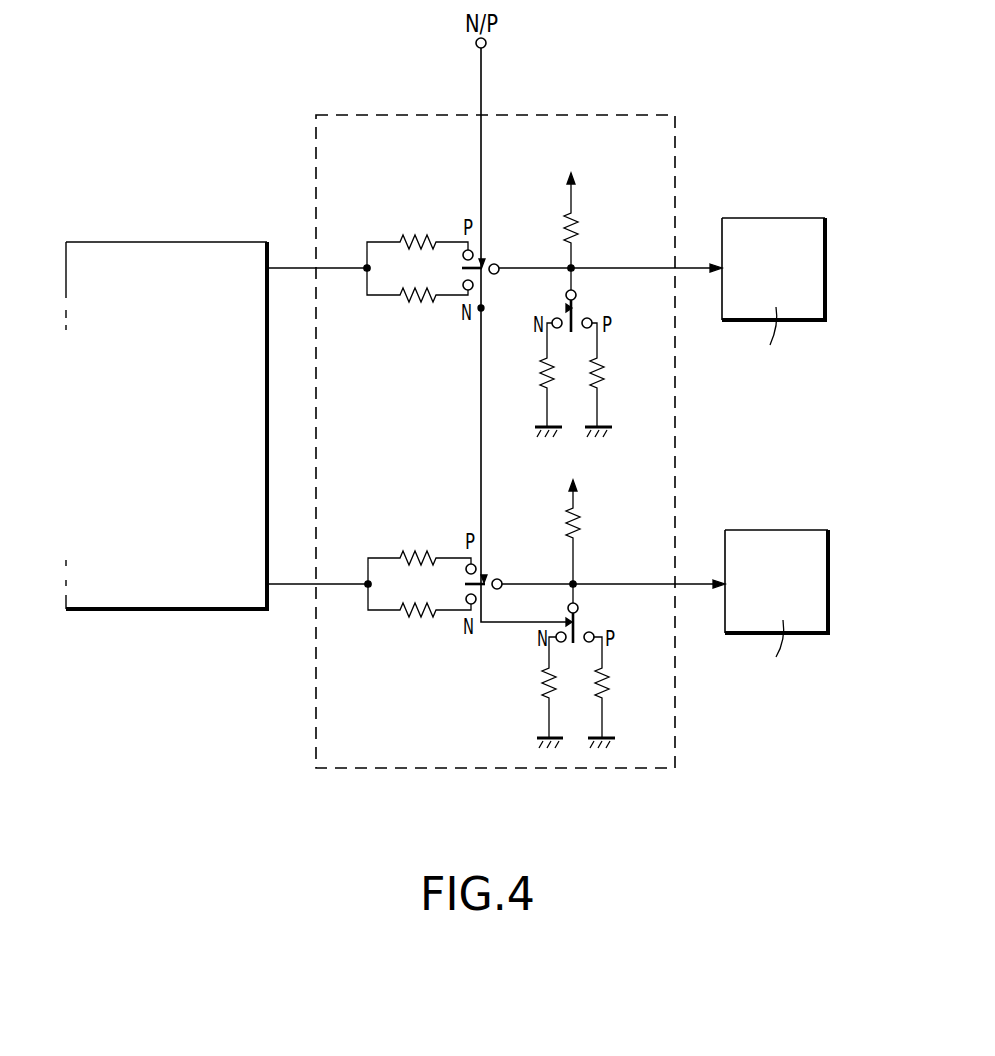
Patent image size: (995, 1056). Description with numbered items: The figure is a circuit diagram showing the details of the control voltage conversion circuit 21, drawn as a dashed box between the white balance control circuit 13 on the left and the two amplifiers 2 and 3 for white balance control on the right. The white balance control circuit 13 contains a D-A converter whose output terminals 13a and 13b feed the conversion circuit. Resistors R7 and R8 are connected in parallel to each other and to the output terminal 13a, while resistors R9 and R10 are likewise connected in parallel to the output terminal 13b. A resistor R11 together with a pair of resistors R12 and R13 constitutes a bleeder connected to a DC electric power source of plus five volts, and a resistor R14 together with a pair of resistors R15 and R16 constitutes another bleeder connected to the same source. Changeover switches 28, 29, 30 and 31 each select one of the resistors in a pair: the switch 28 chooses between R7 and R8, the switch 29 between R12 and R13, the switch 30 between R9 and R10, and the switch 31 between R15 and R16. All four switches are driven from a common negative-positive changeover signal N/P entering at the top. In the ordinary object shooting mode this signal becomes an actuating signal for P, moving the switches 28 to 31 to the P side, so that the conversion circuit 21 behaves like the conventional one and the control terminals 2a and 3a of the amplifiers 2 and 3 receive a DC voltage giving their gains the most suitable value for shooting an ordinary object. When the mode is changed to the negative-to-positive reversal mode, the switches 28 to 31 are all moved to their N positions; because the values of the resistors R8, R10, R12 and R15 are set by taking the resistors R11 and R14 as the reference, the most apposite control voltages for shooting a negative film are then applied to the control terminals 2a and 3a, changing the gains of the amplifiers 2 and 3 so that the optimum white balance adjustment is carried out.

The amplifier for white balance control 2 is at (777, 220).
The control terminal 2a is at (721, 262).
The amplifier for white balance control 3 is at (785, 530).
The control terminal 3a is at (724, 578).
The white balance control circuit 13 is at (130, 242).
The output terminal 13a is at (270, 266).
The output terminal 13b is at (268, 589).
The control voltage conversion circuit 21 is at (606, 115).
The changeover switch 28 is at (488, 262).
The changeover switch 29 is at (577, 315).
The changeover switch 30 is at (490, 578).
The changeover switch 31 is at (580, 630).
The resistor R7 is at (416, 234).
The resistor R8 is at (418, 300).
The resistor R9 is at (416, 550).
The resistor R10 is at (414, 617).
The resistor R11 is at (580, 226).
The resistor R12 is at (540, 378).
The resistor R13 is at (604, 385).
The resistor R14 is at (582, 524).
The resistor R15 is at (541, 682).
The resistor R16 is at (610, 686).